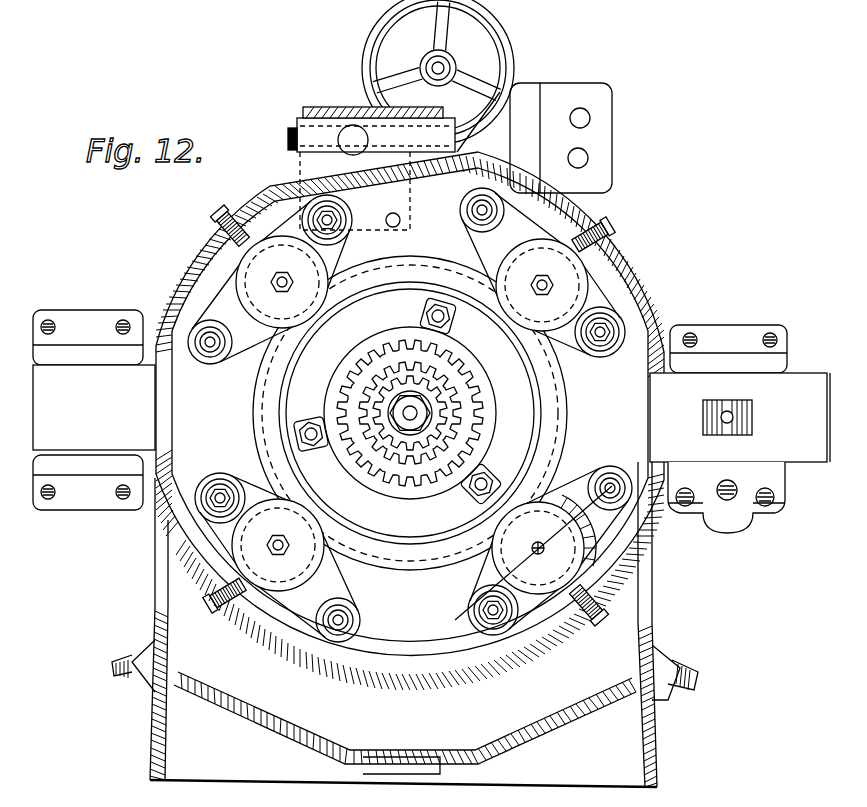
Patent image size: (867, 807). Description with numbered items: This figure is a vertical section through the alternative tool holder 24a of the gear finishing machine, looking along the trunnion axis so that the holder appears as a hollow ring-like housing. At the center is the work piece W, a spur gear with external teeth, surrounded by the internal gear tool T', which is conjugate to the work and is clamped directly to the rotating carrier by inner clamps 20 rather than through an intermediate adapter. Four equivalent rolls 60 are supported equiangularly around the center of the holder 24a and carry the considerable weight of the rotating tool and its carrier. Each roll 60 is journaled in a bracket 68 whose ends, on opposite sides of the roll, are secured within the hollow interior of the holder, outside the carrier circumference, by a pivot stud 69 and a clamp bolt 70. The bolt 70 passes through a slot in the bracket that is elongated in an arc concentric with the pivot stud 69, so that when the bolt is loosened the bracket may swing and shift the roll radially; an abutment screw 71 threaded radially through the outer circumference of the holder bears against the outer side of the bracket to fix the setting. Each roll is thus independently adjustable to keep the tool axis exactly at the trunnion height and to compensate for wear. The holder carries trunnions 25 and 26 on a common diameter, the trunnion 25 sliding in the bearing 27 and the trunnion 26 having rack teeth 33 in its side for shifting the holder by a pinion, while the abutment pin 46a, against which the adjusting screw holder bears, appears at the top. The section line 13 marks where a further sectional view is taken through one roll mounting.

The section line 13 is at (635, 463).
The inner clamp 20 is at (424, 308).
The holder 24a is at (633, 263).
The trunnion 25 is at (97, 448).
The trunnion 26 is at (790, 377).
The bearing 27 is at (63, 502).
The rack teeth 33 is at (753, 430).
The abutment pin 46a is at (305, 140).
The roll 60 is at (250, 267).
The bracket 68 is at (287, 228).
The pivot stud 69 is at (470, 210).
The clamp bolt 70 is at (346, 218).
The abutment screw 71 is at (220, 215).
The tool T' is at (422, 413).
The work piece W is at (389, 470).